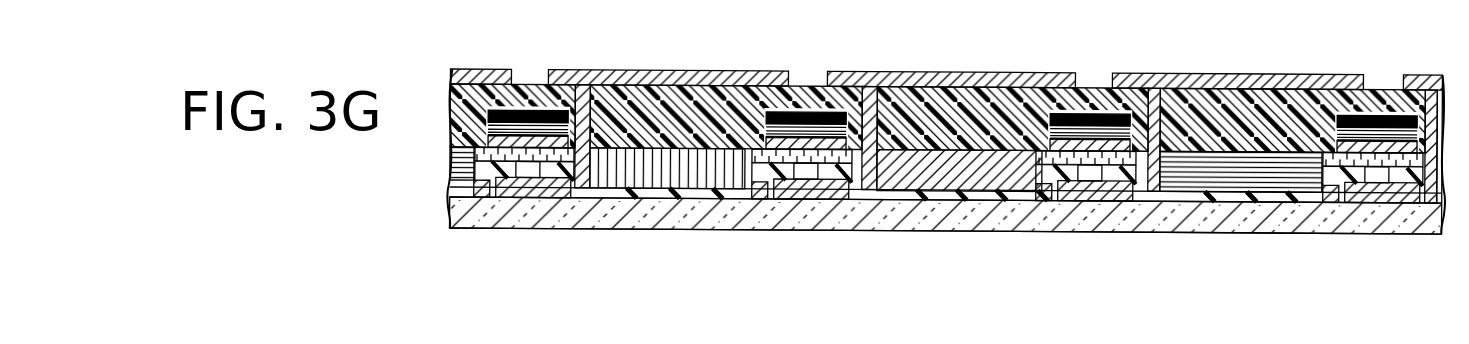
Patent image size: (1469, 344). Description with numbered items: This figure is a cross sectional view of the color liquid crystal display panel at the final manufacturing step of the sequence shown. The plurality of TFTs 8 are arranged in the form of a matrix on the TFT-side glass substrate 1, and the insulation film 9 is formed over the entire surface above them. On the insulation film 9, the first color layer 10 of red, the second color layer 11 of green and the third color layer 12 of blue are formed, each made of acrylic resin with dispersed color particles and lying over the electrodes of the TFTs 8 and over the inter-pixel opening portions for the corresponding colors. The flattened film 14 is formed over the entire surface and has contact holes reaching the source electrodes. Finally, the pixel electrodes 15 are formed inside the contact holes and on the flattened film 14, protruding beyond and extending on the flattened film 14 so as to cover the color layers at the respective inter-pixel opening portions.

The TFT-side glass substrate 1 is at (1410, 213).
The TFT 8 is at (546, 247).
The insulation film 9 is at (938, 200).
The first color layer 10 is at (690, 165).
The second color layer 11 is at (975, 160).
The third color layer 12 is at (1250, 165).
The flattened film 14 is at (620, 96).
The pixel electrode 15 is at (766, 77).